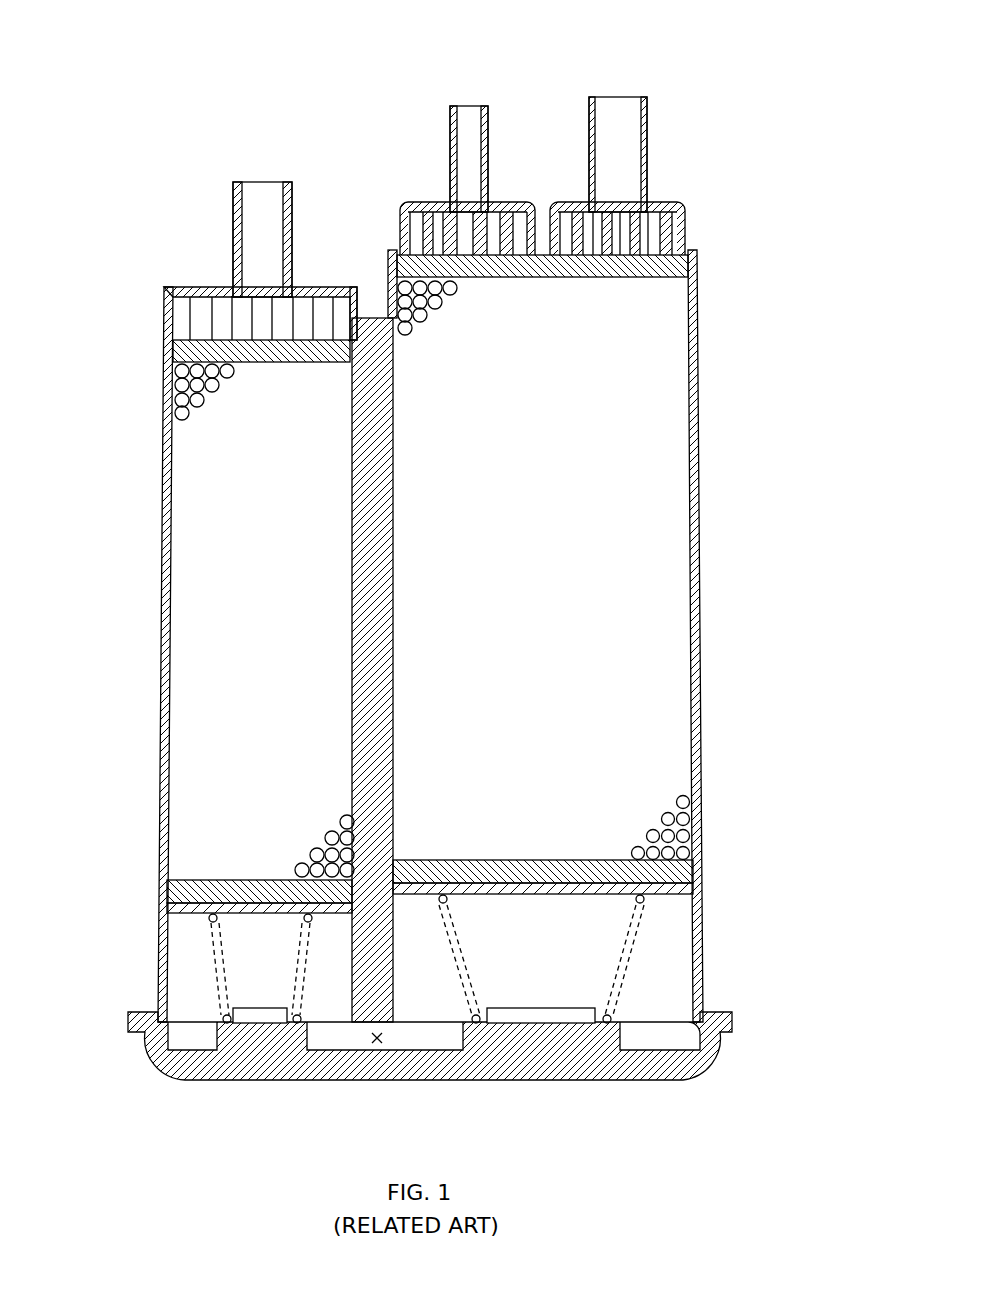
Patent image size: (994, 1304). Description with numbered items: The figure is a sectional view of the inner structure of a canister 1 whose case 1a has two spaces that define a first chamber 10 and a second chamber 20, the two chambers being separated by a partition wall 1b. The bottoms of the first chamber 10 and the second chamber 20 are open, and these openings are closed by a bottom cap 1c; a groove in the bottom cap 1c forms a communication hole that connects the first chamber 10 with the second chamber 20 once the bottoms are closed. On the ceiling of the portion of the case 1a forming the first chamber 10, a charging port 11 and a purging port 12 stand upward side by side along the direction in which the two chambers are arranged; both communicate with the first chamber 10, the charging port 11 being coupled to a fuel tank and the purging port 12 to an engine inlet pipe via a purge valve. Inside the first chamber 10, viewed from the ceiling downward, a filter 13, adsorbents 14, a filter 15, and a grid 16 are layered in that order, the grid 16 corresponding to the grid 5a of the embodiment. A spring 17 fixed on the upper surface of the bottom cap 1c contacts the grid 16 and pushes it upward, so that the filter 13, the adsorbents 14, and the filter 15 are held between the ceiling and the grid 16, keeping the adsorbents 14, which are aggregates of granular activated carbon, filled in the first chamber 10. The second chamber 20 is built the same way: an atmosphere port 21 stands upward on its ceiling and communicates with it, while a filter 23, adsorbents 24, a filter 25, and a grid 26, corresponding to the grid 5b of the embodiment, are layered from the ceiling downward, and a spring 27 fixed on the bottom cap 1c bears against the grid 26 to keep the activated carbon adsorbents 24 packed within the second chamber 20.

The canister 1 is at (431, 572).
The case 1a is at (697, 323).
The partition wall 1b is at (375, 640).
The bottom cap 1c is at (650, 1080).
The first chamber 10 is at (608, 518).
The charging port 11 is at (612, 97).
The purging port 12 is at (470, 106).
The filter 13 is at (686, 243).
The adsorbents 14 is at (697, 793).
The filter 15 is at (700, 866).
The grid 5a is at (608, 908).
The grid 16 is at (670, 895).
The spring 17 is at (633, 960).
The second chamber 20 is at (197, 559).
The atmosphere port 21 is at (262, 182).
The filter 23 is at (173, 352).
The adsorbents 24 is at (175, 413).
The filter 25 is at (170, 886).
The grid 5b is at (195, 930).
The grid 26 is at (192, 914).
The spring 27 is at (212, 973).